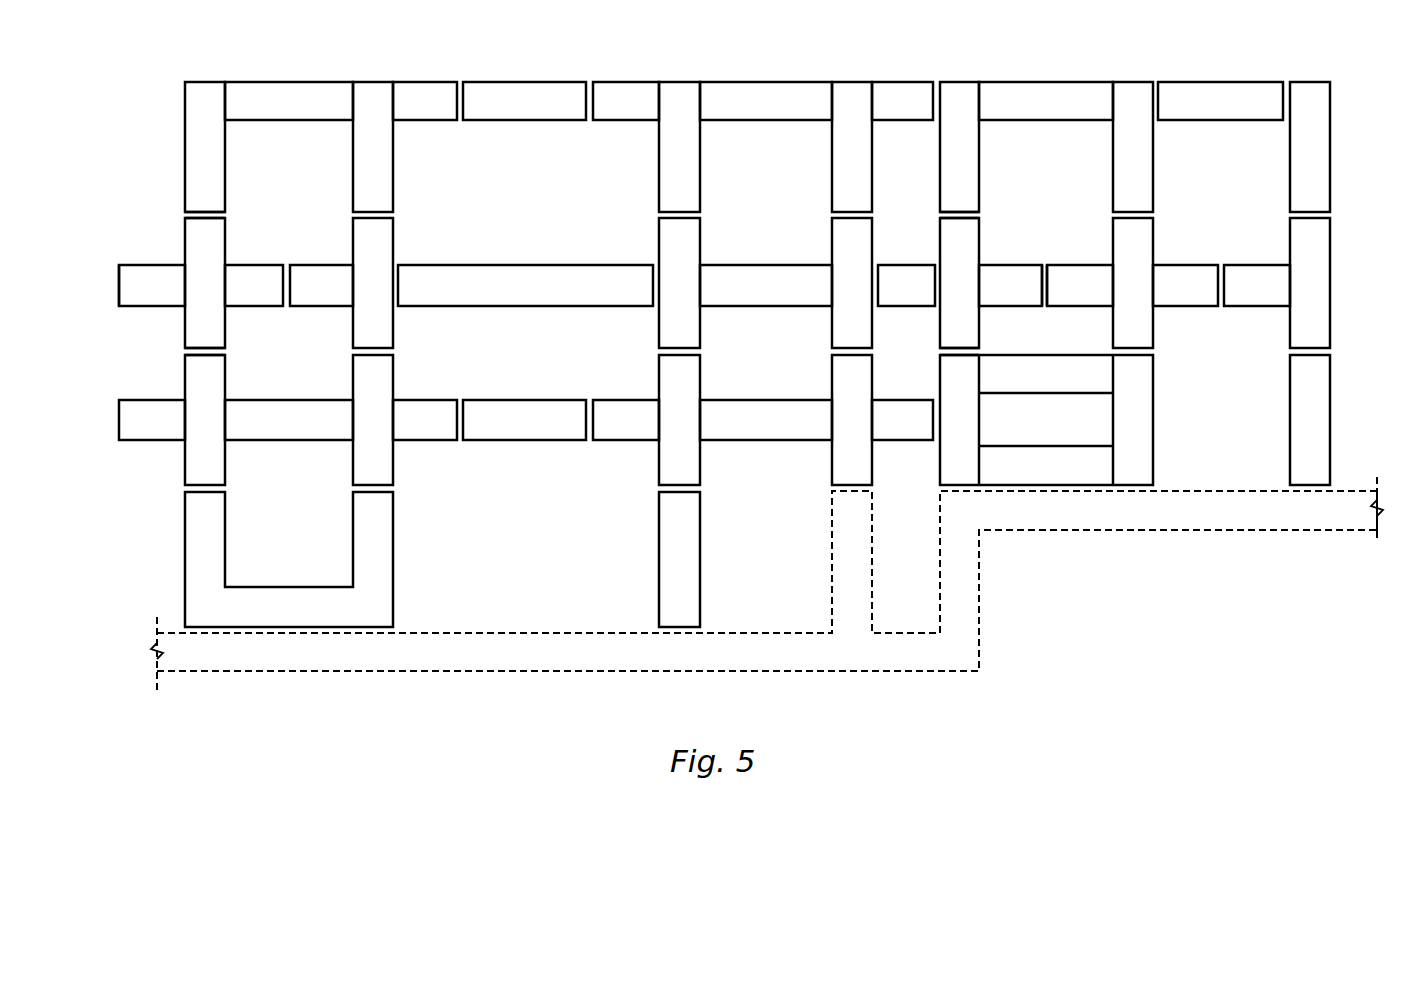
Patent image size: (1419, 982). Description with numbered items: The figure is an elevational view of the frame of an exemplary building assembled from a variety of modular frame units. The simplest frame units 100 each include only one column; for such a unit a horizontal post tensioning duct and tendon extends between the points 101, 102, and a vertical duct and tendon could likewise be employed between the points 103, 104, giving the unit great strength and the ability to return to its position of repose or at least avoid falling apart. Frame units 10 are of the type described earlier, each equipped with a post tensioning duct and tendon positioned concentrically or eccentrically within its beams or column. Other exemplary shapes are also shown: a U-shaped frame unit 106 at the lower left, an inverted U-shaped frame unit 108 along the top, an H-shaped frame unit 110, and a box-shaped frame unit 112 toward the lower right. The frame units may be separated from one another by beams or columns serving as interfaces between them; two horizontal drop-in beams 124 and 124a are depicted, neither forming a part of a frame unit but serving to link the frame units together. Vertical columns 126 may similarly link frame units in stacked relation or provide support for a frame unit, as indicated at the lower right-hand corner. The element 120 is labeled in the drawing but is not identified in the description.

The frame unit 10 is at (789, 399).
The frame unit 100 is at (167, 265).
The point 101 is at (118, 286).
The point 102 is at (289, 286).
The point 103 is at (207, 216).
The point 104 is at (204, 350).
The U-shaped frame unit 106 is at (394, 541).
The inverted U-shaped frame unit 108 is at (1050, 82).
The H-shaped frame unit 110 is at (793, 263).
The box-shaped frame unit 112 is at (1155, 405).
The horizontal strip row 120 is at (396, 240).
The horizontal drop-in beam 124 is at (535, 82).
The horizontal drop-in beam 124a is at (579, 265).
The column 126 is at (1333, 153).